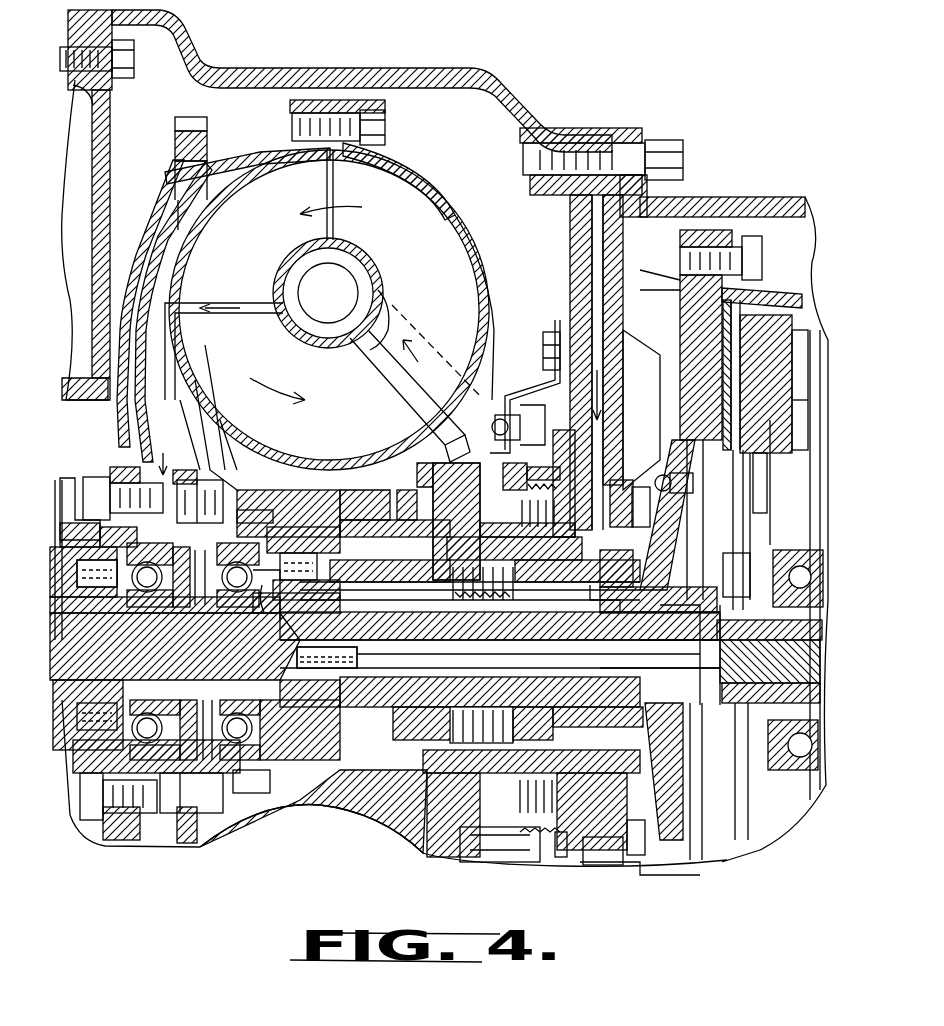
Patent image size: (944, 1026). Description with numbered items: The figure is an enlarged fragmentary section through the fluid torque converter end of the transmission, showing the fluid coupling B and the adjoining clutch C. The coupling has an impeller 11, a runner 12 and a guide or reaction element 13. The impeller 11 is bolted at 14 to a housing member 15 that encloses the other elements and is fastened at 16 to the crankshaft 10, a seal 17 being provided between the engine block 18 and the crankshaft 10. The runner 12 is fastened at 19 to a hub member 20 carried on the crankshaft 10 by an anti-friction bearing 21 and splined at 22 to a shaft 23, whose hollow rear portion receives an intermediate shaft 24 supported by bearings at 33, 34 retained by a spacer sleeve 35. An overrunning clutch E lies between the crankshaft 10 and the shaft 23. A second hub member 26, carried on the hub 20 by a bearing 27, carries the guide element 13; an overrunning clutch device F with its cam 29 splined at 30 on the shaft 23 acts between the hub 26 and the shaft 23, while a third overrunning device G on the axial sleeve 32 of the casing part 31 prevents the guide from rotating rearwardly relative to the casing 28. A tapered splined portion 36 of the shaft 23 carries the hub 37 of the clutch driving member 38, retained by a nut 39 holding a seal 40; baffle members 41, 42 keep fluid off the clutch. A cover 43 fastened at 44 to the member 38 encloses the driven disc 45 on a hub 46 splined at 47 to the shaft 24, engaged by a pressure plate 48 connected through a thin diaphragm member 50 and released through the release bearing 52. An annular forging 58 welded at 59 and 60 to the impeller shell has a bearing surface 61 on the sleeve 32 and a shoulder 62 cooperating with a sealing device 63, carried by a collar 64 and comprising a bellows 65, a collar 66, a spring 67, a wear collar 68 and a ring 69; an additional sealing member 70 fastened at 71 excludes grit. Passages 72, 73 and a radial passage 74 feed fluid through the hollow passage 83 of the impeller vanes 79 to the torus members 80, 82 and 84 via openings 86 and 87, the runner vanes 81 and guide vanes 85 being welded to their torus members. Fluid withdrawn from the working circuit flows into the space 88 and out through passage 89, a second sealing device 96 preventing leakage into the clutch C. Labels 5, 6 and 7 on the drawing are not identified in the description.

The housing 5 is at (90, 648).
The bearing sleeve 6 is at (318, 562).
The member 7 is at (378, 502).
The crankshaft 10 is at (82, 558).
The impeller 11 is at (452, 222).
The runner 12 is at (200, 200).
The guide or reaction element 13 is at (180, 412).
The bolted connection 14 is at (290, 115).
The shroud or housing member 15 is at (162, 175).
The fastening 16 is at (121, 653).
The seal 17 is at (88, 478).
The engine block 18 is at (72, 300).
The fastening 19 is at (255, 485).
The hub member 20 is at (189, 597).
The anti-friction bearing 21 is at (160, 600).
The spline 22 is at (228, 600).
The shaft 23 is at (165, 630).
The intermediate shaft 24 is at (500, 640).
The second hub member 26 is at (175, 120).
The anti-friction bearing 27 is at (232, 488).
The casing 28 is at (560, 128).
The cam 29 is at (272, 595).
The spline 30 is at (497, 715).
The radially inwardly projecting part 31 is at (606, 128).
The axial sleeve 32 is at (461, 542).
The bearing support 33 is at (327, 649).
The bearing support 34 is at (660, 680).
The spacer sleeve 35 is at (432, 676).
The tapered splined portion 36 is at (584, 623).
The hub 37 is at (650, 597).
The clutch driving member 38 is at (678, 292).
The nut 39 is at (731, 781).
The seal 40 is at (690, 655).
The annular baffle member 41 is at (660, 470).
The annular baffle member 42 is at (655, 360).
The cover 43 is at (798, 292).
The fastening 44 is at (760, 248).
The driven disc 45 is at (688, 358).
The hub 46 is at (770, 616).
The spline 47 is at (771, 682).
The pressure plate 48 is at (766, 414).
The thin diaphragm member 50 is at (745, 355).
The release bearing 52 is at (795, 412).
The annular forging 58 is at (548, 378).
The weld 59 is at (535, 355).
The weld 60 is at (430, 468).
The bearing surface 61 is at (531, 803).
The shoulder 62 is at (400, 848).
The sealing device 63 is at (520, 862).
The collar 64 is at (556, 455).
The bellows 65 is at (600, 796).
The collar 66 is at (590, 815).
The spring 67 is at (605, 840).
The wear collar 68 is at (583, 804).
The ring 69 is at (520, 786).
The additional sealing member 70 is at (548, 395).
The fastening 71 is at (548, 332).
The passage 72 is at (403, 423).
The passage 73 is at (420, 445).
The radially extending passage 74 is at (572, 246).
The vanes or blades 79 is at (470, 258).
The torus member 80 is at (350, 266).
The vanes of the runner 81 is at (200, 250).
The torus member 82 is at (286, 292).
The hollow passage 83 is at (388, 300).
The torus member 84 is at (316, 318).
The vanes of the guide 85 is at (224, 351).
The opening 86 is at (328, 293).
The opening 87 is at (455, 410).
The space 88 is at (380, 590).
The passage 89 is at (585, 555).
The second sealing device 96 is at (500, 606).
The fluid coupling B is at (498, 105).
The clutch C is at (735, 210).
The overrunning clutch E is at (83, 615).
The overrunning clutch device F is at (322, 520).
The third overrunning device G is at (372, 486).